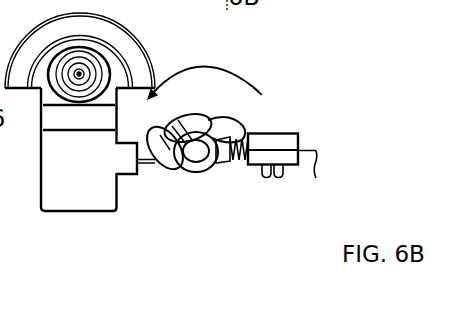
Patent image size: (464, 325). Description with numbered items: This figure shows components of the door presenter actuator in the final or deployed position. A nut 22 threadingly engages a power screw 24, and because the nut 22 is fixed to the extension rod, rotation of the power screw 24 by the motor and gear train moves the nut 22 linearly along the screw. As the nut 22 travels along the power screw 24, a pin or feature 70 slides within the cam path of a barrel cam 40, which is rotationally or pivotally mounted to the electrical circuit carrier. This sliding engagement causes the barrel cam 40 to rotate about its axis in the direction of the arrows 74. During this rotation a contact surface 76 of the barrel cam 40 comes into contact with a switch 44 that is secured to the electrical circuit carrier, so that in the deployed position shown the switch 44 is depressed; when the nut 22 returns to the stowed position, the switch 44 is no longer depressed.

The nut 22 is at (112, 204).
The power screw 24 is at (79, 63).
The barrel cam 40 is at (230, 125).
The switch 44 is at (280, 135).
The pin or feature 70 is at (147, 143).
The arrows 74 is at (227, 68).
The contact surface 76 is at (228, 153).